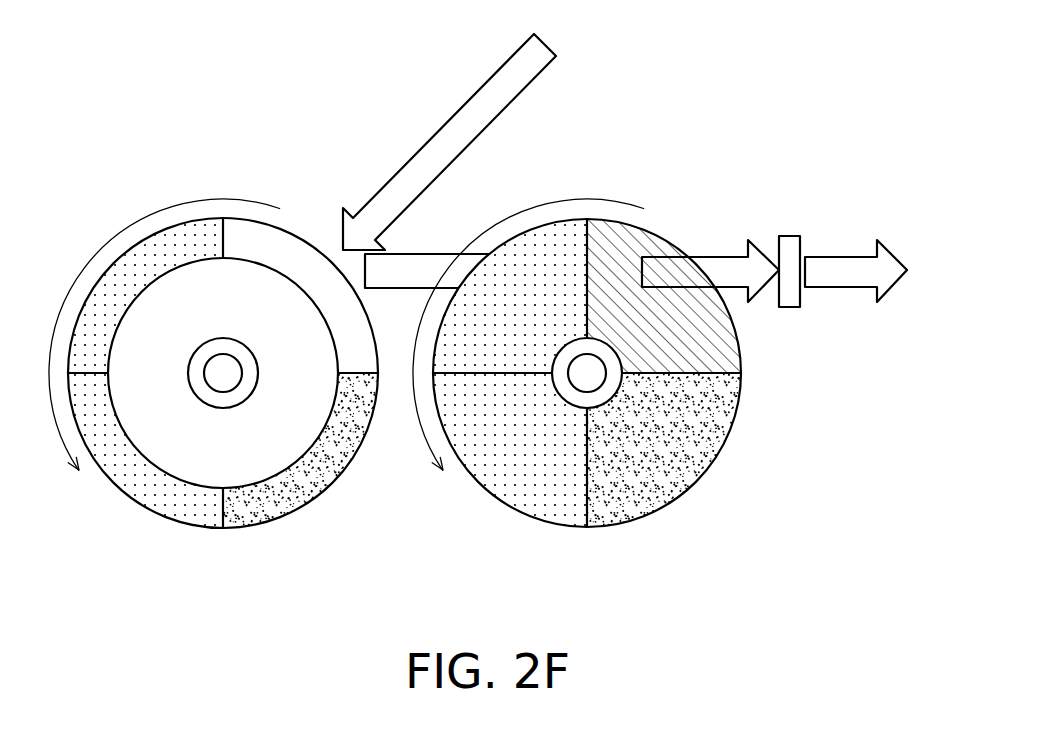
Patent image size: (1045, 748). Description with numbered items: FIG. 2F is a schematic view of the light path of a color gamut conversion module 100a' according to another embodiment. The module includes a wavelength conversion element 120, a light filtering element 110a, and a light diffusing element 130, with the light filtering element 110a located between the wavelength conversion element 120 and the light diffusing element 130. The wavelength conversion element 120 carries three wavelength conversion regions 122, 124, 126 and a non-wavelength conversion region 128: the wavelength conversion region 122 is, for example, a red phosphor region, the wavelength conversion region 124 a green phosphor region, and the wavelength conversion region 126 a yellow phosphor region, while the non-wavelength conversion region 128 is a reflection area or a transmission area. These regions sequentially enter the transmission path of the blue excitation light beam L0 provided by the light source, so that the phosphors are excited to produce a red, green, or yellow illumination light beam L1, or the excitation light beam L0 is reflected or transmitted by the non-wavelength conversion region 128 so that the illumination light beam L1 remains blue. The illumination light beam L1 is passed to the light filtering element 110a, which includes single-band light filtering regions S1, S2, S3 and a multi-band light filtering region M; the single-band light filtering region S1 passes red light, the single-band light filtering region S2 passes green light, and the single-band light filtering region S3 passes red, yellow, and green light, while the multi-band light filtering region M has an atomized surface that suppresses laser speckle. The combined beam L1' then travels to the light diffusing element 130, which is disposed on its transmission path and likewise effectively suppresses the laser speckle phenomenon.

The wavelength conversion element 120 is at (209, 375).
The wavelength conversion region 122 is at (293, 490).
The wavelength conversion region 124 is at (128, 476).
The wavelength conversion region 126 is at (130, 272).
The non-wavelength conversion region 128 is at (300, 256).
The light diffusing element 130 is at (790, 240).
The light filtering element 110a is at (619, 344).
The color gamut conversion module 100a' is at (681, 368).
The excitation light beam L0 is at (463, 131).
The illumination light beam L1 is at (427, 241).
The combined beam L1' is at (796, 232).
The single-band light filtering region S1 is at (648, 437).
The single-band light filtering region S2 is at (542, 460).
The single-band light filtering region S3 is at (533, 288).
The multi-band light filtering region M is at (608, 268).